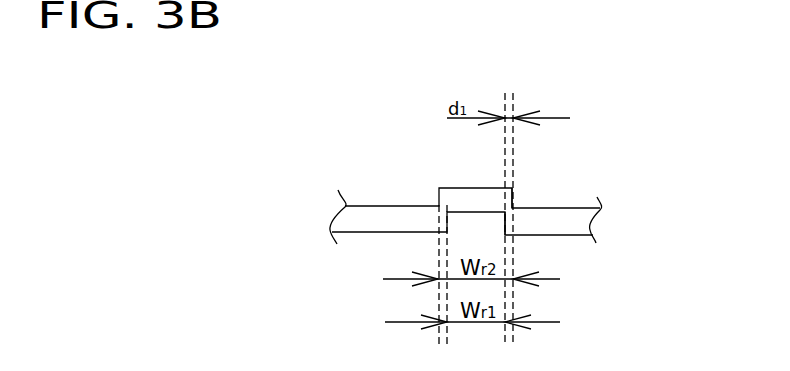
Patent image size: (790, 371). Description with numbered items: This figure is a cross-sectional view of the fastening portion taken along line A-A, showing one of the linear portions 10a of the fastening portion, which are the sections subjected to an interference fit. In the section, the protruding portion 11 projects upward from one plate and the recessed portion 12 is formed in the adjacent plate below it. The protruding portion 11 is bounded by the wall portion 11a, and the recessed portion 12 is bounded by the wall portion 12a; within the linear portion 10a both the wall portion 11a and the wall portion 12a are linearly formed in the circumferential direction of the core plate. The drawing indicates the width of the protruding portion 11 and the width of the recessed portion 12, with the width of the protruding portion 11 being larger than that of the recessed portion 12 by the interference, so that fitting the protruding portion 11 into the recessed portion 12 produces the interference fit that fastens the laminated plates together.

The linear portion 10a is at (410, 98).
The protruding portion 11 is at (460, 193).
The wall portion of the protruding portion 11a is at (513, 195).
The recessed portion 12 is at (470, 213).
The wall portion of the recessed portion 12a is at (505, 225).